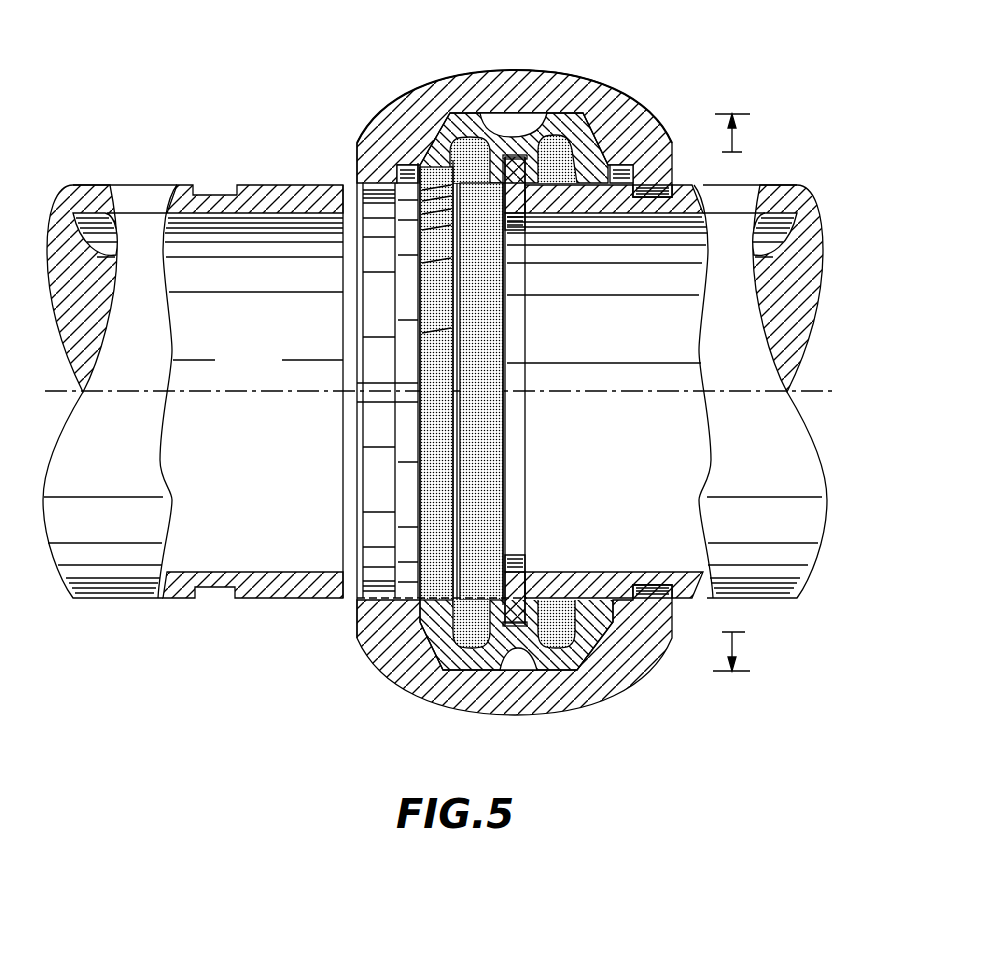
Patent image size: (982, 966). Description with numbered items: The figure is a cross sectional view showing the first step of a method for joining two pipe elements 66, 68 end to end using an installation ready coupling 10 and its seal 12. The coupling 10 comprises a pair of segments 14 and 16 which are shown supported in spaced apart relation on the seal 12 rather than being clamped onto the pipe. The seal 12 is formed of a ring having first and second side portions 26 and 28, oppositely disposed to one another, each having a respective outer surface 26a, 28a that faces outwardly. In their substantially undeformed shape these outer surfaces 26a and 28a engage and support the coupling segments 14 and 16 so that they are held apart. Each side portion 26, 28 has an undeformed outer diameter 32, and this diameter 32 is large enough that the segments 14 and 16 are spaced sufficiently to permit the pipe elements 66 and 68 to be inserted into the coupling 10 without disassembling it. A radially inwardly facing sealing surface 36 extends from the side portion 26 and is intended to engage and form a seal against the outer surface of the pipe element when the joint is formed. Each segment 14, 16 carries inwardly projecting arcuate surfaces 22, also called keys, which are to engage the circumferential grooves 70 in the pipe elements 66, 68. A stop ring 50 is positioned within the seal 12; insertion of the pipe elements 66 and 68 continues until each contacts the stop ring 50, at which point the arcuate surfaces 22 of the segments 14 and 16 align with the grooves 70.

The coupling 10 is at (376, 61).
The seal 12 is at (580, 127).
The segment 14 is at (532, 74).
The segment 16 is at (624, 676).
The arcuate surfaces 22 is at (373, 583).
The first side portion 26 is at (440, 675).
The outer surface 26a is at (473, 672).
The second side portion 28 is at (580, 680).
The outer surface 28a is at (547, 672).
The outer diameter 32 is at (735, 140).
The sealing surface 36 is at (436, 480).
The stop ring 50 is at (512, 333).
The pipe element 66 is at (108, 595).
The pipe element 68 is at (805, 573).
The circumferential grooves 70 is at (216, 600).